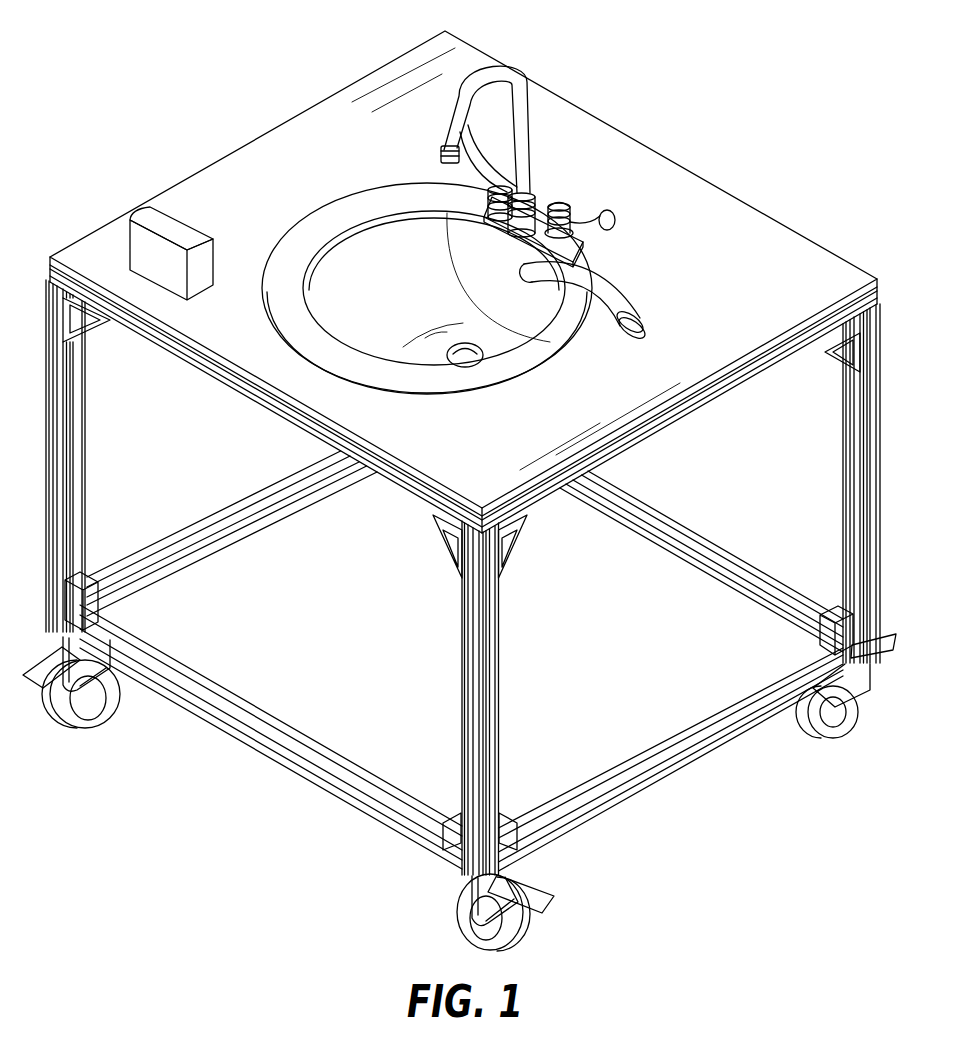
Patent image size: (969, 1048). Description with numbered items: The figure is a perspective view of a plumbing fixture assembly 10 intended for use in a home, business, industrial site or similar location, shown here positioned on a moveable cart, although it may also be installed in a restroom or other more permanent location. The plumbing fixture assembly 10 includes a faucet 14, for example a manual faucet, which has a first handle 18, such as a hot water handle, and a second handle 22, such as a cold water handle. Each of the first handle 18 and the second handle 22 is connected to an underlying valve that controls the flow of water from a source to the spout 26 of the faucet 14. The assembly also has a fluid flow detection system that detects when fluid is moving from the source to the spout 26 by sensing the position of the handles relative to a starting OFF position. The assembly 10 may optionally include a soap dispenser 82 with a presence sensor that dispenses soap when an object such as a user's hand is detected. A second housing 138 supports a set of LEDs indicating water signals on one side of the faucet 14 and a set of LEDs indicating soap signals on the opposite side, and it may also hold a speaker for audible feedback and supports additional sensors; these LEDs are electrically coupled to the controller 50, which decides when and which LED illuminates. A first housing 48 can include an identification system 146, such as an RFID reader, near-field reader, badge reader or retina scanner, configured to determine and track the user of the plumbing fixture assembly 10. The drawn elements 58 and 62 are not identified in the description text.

The plumbing fixture assembly 10 is at (766, 104).
The faucet 14 is at (539, 109).
The first handle 18 is at (503, 95).
The spout 26 is at (449, 133).
The second housing 138 is at (547, 198).
The second handle 22 is at (610, 212).
The deck plate 62 is at (597, 250).
The soap dispenser 82 is at (640, 290).
The countertop 58 is at (783, 250).
The first housing 48 is at (130, 248).
The controller 50 is at (166, 226).
The identification system 146 is at (147, 213).